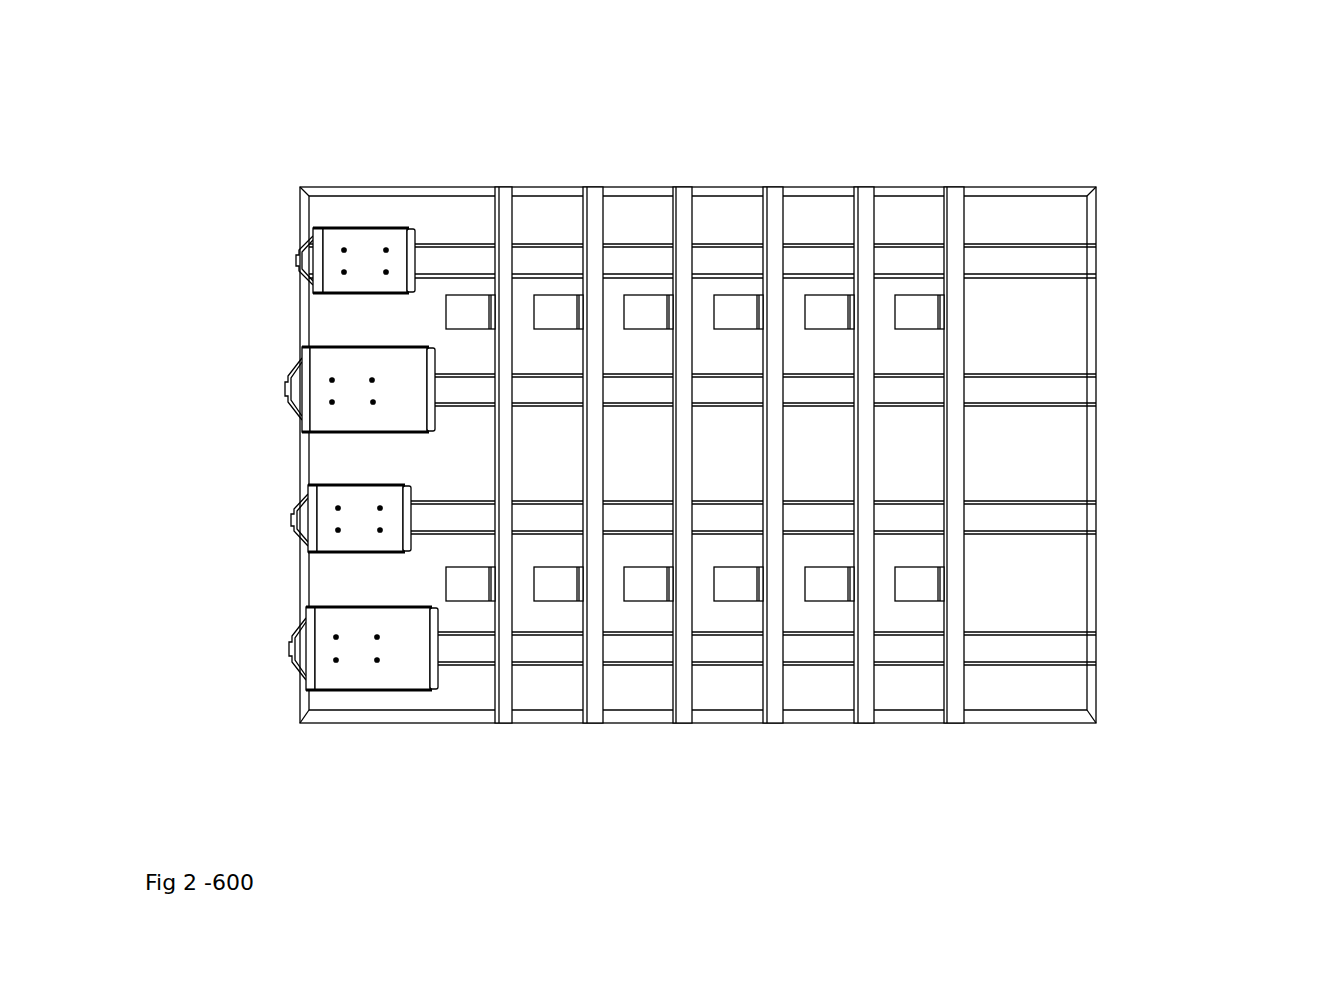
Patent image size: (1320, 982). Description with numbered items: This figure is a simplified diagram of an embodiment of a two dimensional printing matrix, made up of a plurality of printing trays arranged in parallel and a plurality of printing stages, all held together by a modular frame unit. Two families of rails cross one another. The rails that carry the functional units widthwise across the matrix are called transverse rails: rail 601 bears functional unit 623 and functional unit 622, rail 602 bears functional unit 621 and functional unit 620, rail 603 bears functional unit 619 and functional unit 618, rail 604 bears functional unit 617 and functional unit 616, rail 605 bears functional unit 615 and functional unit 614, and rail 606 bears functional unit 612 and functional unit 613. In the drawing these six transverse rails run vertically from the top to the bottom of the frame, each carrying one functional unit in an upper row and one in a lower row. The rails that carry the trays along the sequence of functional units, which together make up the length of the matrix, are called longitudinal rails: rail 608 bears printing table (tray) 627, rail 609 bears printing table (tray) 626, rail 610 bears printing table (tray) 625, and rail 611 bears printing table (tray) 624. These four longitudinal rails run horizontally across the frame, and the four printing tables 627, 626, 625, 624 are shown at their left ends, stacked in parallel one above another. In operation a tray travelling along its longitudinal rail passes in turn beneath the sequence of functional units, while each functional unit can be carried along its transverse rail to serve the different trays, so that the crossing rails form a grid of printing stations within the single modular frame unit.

The rail 608 is at (1013, 262).
The rail 609 is at (1017, 388).
The rail 610 is at (979, 547).
The rail 611 is at (980, 660).
The rail 601 is at (508, 222).
The rail 602 is at (592, 222).
The rail 603 is at (683, 222).
The rail 604 is at (778, 237).
The rail 605 is at (864, 237).
The rail 606 is at (956, 237).
The printing table (tray) 627 is at (353, 259).
The printing table (tray) 626 is at (337, 368).
The printing table (tray) 625 is at (344, 497).
The printing table (tray) 624 is at (342, 625).
The functional unit 623 is at (470, 307).
The functional unit 622 is at (470, 583).
The functional unit 621 is at (563, 308).
The functional unit 620 is at (563, 583).
The functional unit 619 is at (648, 310).
The functional unit 618 is at (658, 583).
The functional unit 617 is at (737, 309).
The functional unit 616 is at (750, 583).
The functional unit 615 is at (829, 311).
The functional unit 614 is at (846, 583).
The functional unit 613 is at (920, 585).
The functional unit 612 is at (903, 310).